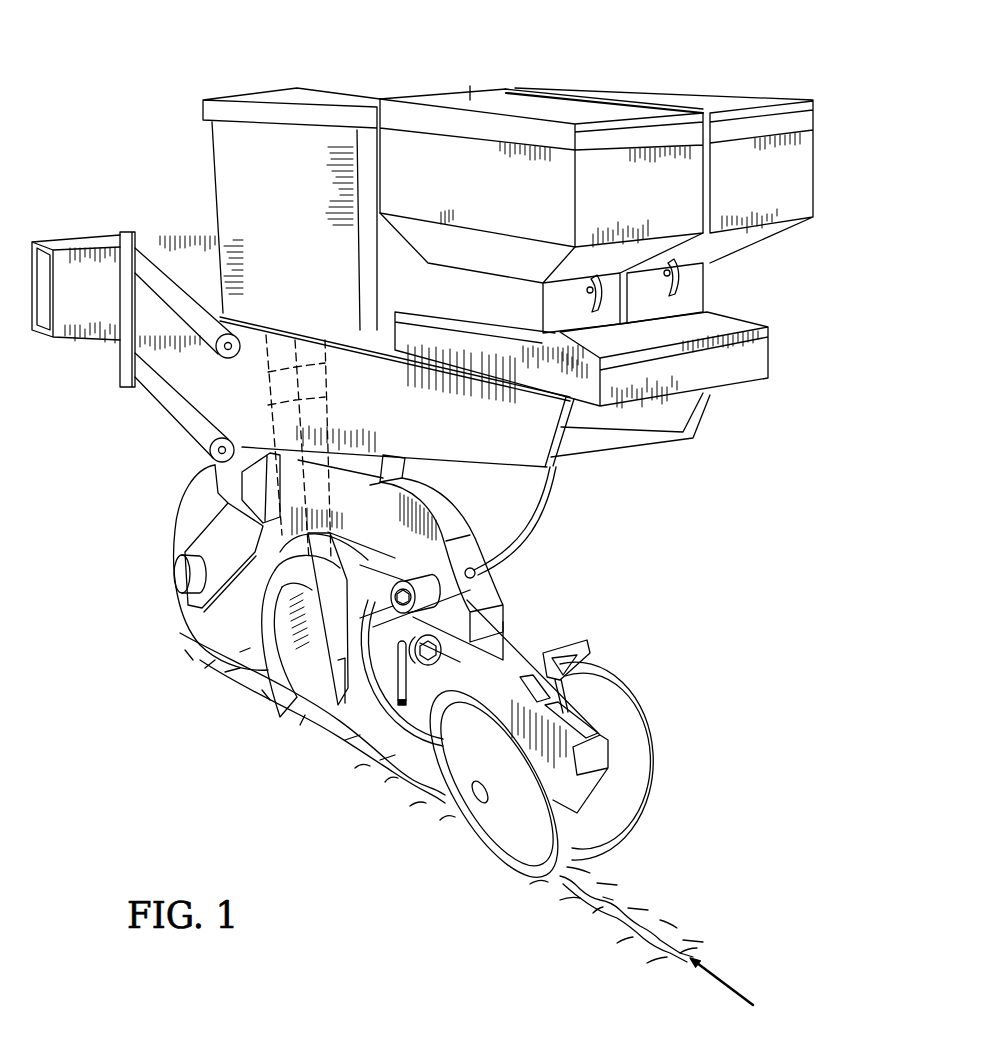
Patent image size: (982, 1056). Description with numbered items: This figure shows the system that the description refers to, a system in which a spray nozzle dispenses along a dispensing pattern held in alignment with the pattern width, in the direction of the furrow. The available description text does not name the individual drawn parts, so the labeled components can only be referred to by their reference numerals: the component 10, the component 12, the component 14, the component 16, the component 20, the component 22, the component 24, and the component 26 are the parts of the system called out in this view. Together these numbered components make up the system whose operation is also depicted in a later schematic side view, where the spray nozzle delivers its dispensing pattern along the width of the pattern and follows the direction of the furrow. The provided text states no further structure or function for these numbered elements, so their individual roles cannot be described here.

The furrow opener disc 10 is at (385, 698).
The soil surface / furrow 12 is at (620, 907).
The gauge wheel 14 is at (158, 523).
The press wheels 16 is at (393, 718).
The direction of travel arrow 20 is at (723, 980).
The press wheel arm assembly 22 is at (500, 643).
The seed hoppers 24 is at (470, 100).
The seed meter 26 is at (268, 420).